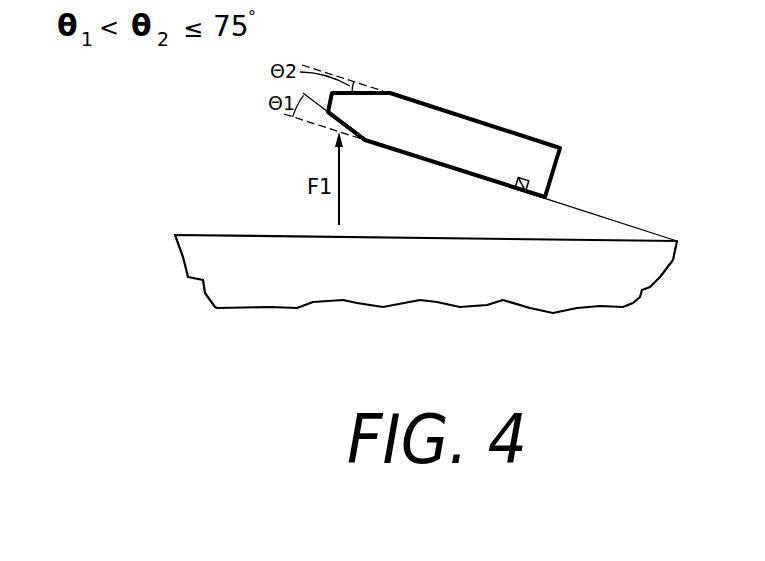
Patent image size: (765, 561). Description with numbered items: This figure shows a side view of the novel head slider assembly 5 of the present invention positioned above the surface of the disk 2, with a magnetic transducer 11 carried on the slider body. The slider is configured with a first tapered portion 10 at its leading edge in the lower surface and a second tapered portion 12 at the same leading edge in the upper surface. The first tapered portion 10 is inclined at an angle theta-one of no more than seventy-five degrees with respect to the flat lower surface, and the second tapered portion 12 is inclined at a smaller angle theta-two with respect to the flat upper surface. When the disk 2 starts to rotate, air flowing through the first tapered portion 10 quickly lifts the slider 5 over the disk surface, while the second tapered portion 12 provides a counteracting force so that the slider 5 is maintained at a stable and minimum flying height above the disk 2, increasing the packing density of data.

The disk 2 is at (357, 295).
The head slider assembly 5 is at (466, 124).
The first tapered portion 10 is at (357, 138).
The magnetic transducer 11 is at (527, 186).
The second tapered portion 12 is at (373, 91).